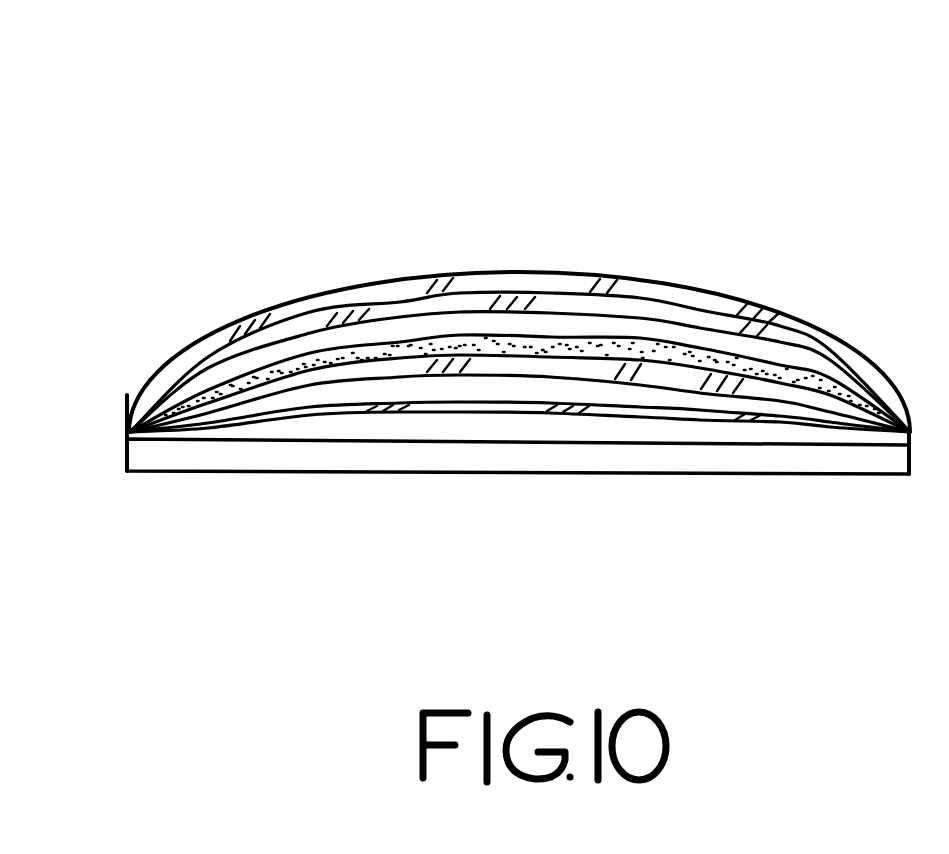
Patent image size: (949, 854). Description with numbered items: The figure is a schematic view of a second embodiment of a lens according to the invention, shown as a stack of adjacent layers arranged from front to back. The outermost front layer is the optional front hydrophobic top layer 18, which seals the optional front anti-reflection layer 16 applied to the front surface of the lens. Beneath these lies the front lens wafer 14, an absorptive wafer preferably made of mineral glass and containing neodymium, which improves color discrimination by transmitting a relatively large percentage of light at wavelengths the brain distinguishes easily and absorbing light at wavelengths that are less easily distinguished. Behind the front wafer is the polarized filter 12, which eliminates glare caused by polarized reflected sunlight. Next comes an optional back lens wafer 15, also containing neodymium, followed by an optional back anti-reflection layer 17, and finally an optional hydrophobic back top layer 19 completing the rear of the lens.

The polarized filter 12 is at (557, 345).
The front lens wafer 14 is at (412, 327).
The back lens wafer 15 is at (598, 372).
The front anti-reflection layer 16 is at (668, 320).
The back anti-reflection layer 17 is at (415, 403).
The front hydrophobic top layer 18 is at (617, 292).
The hydrophobic back top layer 19 is at (208, 455).